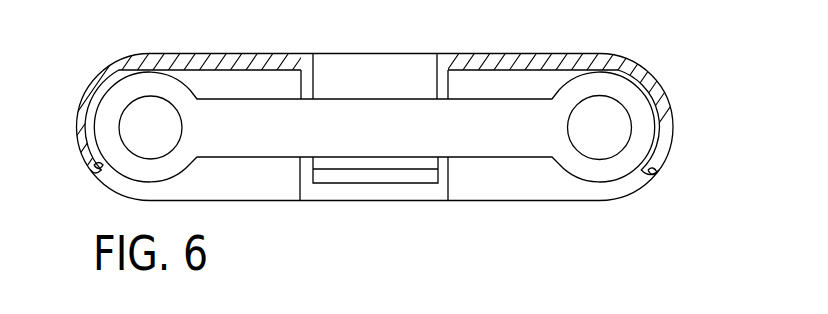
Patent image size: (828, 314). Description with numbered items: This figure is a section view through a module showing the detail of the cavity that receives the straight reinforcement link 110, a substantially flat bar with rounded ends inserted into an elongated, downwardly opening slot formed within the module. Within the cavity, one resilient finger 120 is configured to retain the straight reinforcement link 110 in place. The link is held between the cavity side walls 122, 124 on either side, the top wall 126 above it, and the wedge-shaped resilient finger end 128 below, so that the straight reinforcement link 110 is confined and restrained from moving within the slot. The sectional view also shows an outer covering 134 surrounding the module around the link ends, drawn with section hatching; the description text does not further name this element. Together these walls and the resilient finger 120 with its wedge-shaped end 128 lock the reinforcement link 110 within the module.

The straight reinforcement link 110 is at (484, 142).
The resilient finger 120 is at (369, 69).
The side wall 122 is at (98, 167).
The side wall 124 is at (650, 178).
The top wall 126 is at (204, 68).
The wedge-shaped resilient finger end 128 is at (327, 155).
The outer sleeve 134 is at (157, 54).